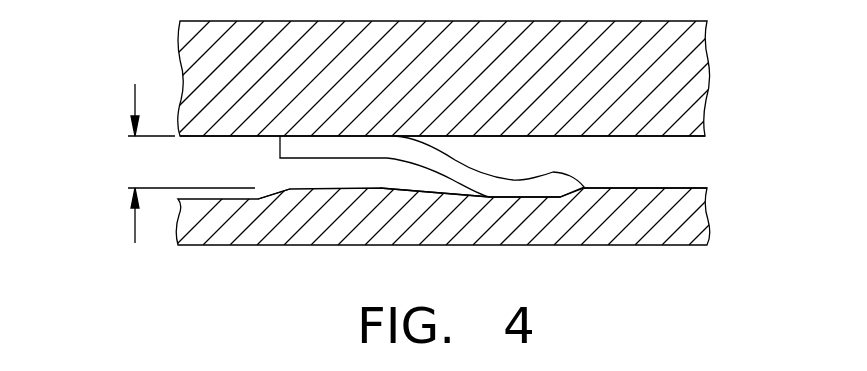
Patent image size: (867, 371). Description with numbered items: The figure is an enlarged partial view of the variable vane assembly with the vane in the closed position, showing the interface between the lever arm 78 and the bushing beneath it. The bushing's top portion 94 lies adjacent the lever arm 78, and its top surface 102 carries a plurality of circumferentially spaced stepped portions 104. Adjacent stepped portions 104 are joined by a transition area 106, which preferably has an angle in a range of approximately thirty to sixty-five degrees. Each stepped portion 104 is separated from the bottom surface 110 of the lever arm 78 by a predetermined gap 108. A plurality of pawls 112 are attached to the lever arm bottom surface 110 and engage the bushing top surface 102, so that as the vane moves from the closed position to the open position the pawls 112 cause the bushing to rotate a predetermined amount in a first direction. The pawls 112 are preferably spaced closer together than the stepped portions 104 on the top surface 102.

The lever arm 78 is at (683, 77).
The top portion 94 is at (683, 221).
The bottom surface 110 is at (677, 141).
The top surface 102 is at (677, 188).
The pawls 112 is at (437, 165).
The stepped portions 104 is at (393, 175).
The transition area 106 is at (278, 195).
The gap 108 is at (134, 93).